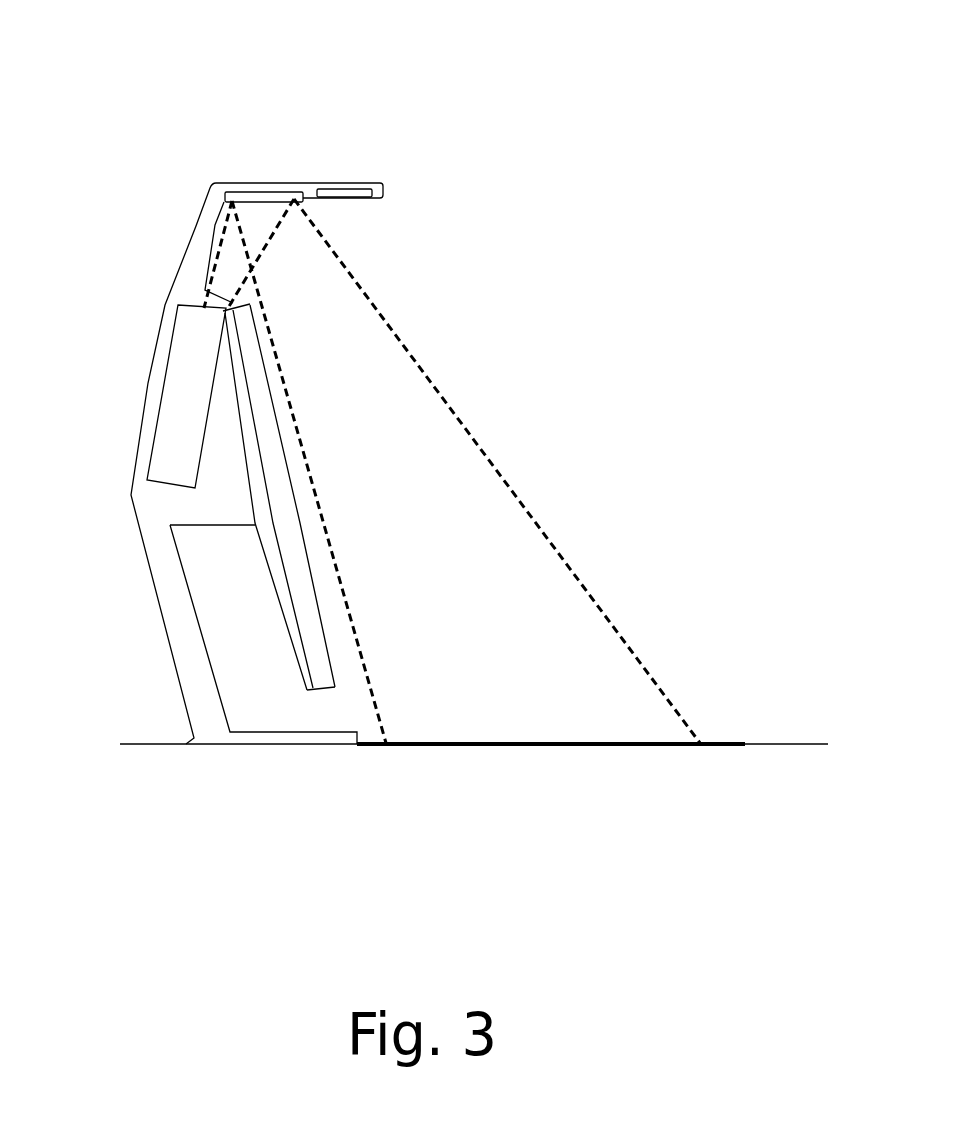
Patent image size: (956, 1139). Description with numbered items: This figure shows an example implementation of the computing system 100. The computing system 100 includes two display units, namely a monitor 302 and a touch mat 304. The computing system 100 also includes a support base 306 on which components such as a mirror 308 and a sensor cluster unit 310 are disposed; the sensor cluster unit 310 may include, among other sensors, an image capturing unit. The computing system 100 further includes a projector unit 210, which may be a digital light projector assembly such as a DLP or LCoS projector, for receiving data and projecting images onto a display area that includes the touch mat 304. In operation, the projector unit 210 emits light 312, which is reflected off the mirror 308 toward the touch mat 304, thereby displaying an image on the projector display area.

The computing system 100 is at (371, 96).
The projector unit 210 is at (167, 380).
The monitor 302 is at (273, 603).
The touch mat 304 is at (530, 745).
The support base 306 is at (197, 225).
The mirror 308 is at (263, 192).
The sensor cluster unit 310 is at (353, 192).
The light 312 is at (430, 364).